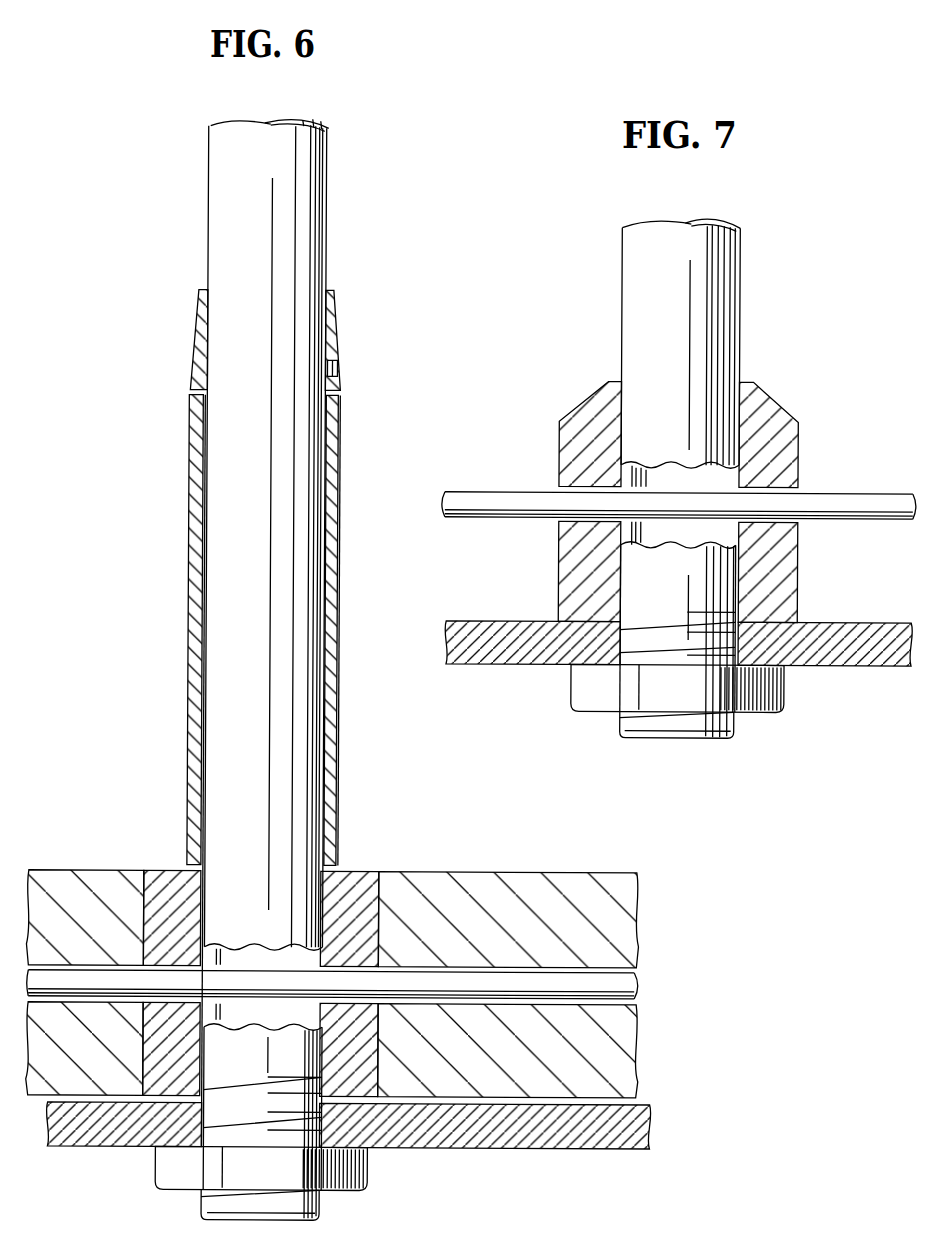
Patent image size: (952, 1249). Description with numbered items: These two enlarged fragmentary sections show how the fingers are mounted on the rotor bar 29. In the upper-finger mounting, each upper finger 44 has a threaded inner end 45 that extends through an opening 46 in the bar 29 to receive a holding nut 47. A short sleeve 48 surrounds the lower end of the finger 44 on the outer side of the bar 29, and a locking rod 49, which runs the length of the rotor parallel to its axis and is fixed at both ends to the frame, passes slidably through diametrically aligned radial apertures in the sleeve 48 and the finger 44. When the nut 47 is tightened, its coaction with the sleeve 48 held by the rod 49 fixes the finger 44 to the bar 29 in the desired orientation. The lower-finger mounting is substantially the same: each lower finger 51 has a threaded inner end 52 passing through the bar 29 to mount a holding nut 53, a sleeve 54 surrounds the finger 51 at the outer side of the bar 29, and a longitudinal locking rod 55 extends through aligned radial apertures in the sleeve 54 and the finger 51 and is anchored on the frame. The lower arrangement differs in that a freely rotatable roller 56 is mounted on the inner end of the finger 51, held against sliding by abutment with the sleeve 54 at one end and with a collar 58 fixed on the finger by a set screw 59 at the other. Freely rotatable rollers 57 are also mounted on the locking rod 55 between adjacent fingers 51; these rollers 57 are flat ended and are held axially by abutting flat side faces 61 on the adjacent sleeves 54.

In FIG. 6, the lower finger 51 is at (314, 210).
In FIG. 6, the collar 58 is at (333, 327).
In FIG. 6, the set screw 59 is at (338, 367).
In FIG. 6, the roller 56 is at (337, 648).
In FIG. 6, the roller 57 is at (95, 878).
In FIG. 6, the flat side face 61 is at (283, 956).
In FIG. 6, the sleeve 54 is at (360, 880).
In FIG. 6, the locking rod 55 is at (630, 980).
In FIG. 6, the holding nut 53 is at (355, 1175).
In FIG. 6, the threaded inner end 52 is at (317, 1210).
In FIG. 6, the bar 29 is at (479, 1149).
In FIG. 7, the bar 29 is at (845, 623).
In FIG. 7, the upper finger 44 is at (739, 290).
In FIG. 7, the sleeve 48 is at (798, 440).
In FIG. 7, the locking rod 49 is at (862, 497).
In FIG. 7, the opening 46 is at (638, 630).
In FIG. 7, the holding nut 47 is at (577, 693).
In FIG. 7, the threaded inner end 45 is at (625, 728).